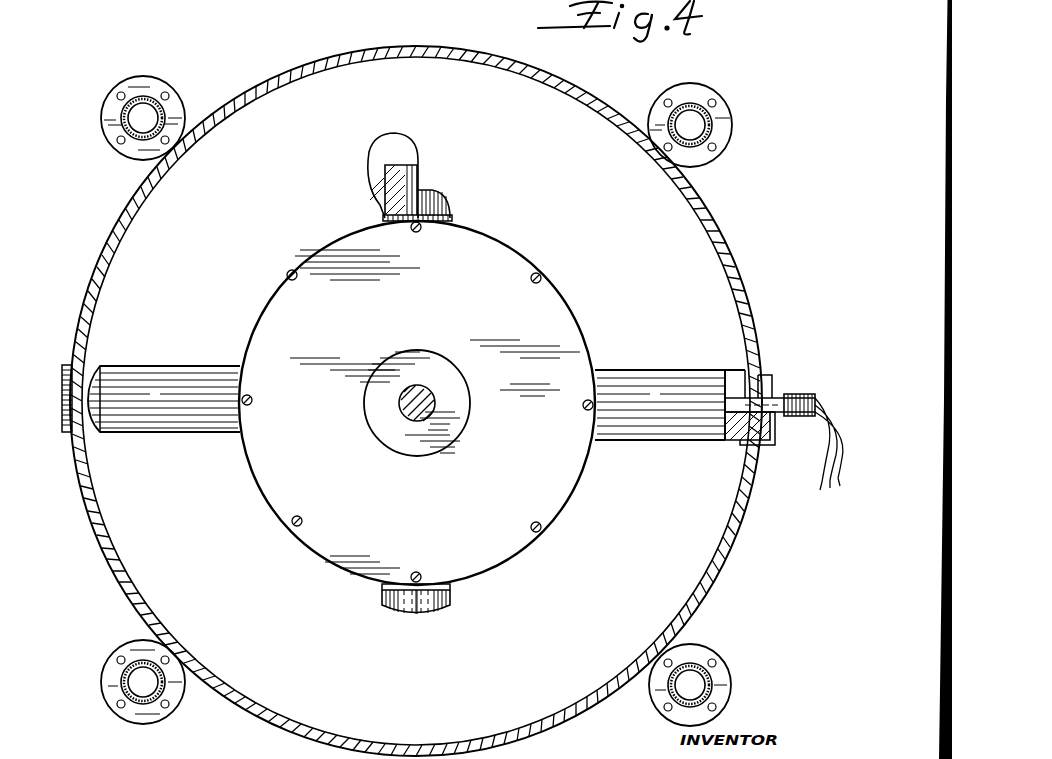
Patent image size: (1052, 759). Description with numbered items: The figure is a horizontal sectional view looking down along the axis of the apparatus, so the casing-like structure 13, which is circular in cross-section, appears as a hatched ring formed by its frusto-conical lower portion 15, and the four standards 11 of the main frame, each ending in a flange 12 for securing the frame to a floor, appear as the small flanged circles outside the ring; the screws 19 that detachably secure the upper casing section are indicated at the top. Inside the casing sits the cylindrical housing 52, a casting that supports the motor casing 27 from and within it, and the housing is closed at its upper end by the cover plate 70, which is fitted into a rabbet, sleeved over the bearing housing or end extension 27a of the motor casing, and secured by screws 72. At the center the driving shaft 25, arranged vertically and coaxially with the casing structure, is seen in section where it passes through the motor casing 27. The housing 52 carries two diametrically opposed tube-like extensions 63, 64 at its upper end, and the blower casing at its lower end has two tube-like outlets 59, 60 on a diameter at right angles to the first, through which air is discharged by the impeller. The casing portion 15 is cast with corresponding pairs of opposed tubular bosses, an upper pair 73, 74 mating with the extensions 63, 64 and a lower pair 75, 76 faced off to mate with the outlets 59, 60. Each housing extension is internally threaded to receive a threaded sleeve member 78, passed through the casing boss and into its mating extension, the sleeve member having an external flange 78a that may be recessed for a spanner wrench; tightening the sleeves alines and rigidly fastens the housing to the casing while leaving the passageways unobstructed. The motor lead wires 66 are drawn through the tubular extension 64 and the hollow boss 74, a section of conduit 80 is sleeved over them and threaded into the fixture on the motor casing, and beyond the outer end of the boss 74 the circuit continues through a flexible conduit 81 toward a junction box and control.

The standards 11 is at (153, 100).
The flanges 12 is at (130, 80).
The casing-like structure 13 is at (113, 590).
The lower casing portion 15 is at (96, 553).
The screws 19 is at (268, 0).
The driving shaft 25 is at (436, 401).
The motor casing 27 is at (393, 455).
The end extension of motor casing 27a is at (378, 440).
The cylindrical housing 52 is at (634, 442).
The tube-like outlet 59 is at (452, 219).
The tube-like outlet 60 is at (381, 590).
The tube-like extension 63 is at (197, 440).
The tube-like extension 64 is at (677, 442).
The lead wires 66 is at (830, 476).
The cover plate 70 is at (530, 259).
The screws 72 is at (542, 281).
The upper tubular boss 73 is at (102, 368).
The upper tubular boss 74 is at (726, 372).
The lower tubular boss 75 is at (442, 206).
The lower tubular boss 76 is at (452, 598).
The sleeve member 78 is at (62, 408).
The external flange of sleeve member 78a is at (385, 178).
The conduit 80 is at (776, 398).
The flexible conduit 81 is at (802, 396).